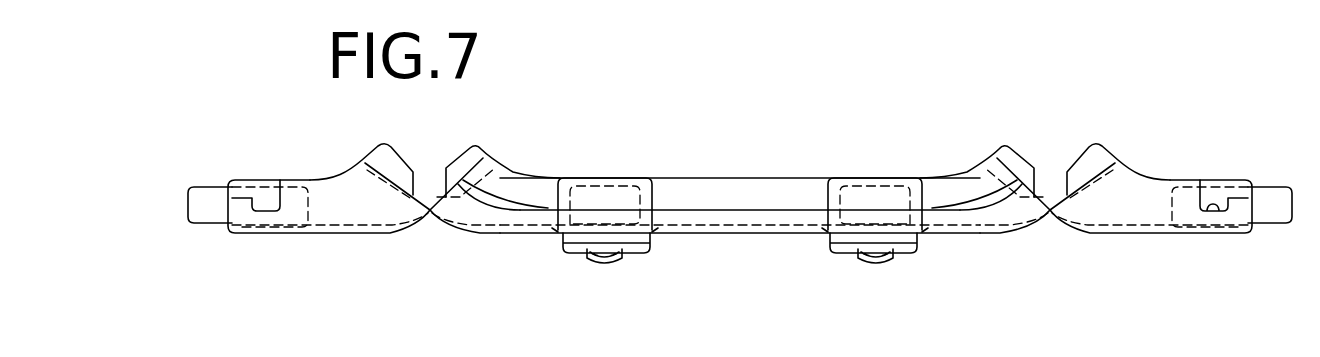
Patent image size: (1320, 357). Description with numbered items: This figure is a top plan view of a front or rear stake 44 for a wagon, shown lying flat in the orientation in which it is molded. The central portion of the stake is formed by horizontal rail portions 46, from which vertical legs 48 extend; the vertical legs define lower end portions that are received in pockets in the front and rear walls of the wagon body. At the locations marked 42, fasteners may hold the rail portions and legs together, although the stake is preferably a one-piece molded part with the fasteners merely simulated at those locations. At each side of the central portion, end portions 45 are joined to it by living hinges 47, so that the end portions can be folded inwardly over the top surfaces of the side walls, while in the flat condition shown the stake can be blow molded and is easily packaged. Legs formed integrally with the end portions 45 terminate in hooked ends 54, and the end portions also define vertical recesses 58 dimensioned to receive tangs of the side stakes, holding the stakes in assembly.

The stake 44 is at (466, 283).
The end portions 45 is at (354, 213).
The horizontal rail portions 46 is at (793, 200).
The living hinges 47 is at (430, 210).
The vertical legs 48 is at (580, 247).
The fasteners 42 is at (884, 262).
The hooked ends 54 is at (205, 215).
The vertical recesses 58 is at (263, 210).